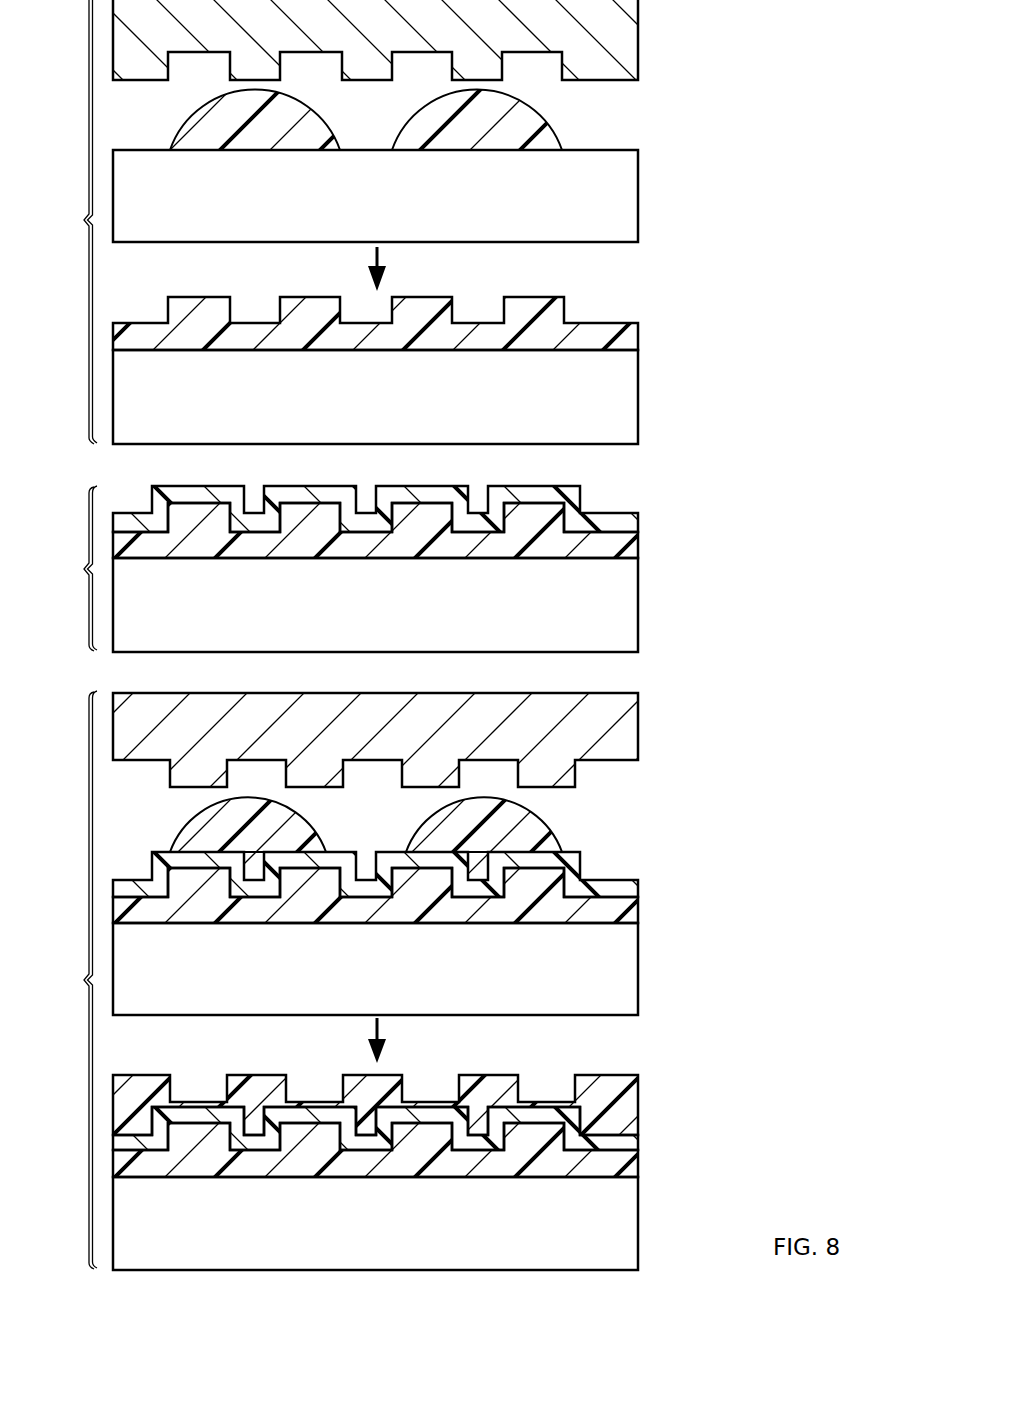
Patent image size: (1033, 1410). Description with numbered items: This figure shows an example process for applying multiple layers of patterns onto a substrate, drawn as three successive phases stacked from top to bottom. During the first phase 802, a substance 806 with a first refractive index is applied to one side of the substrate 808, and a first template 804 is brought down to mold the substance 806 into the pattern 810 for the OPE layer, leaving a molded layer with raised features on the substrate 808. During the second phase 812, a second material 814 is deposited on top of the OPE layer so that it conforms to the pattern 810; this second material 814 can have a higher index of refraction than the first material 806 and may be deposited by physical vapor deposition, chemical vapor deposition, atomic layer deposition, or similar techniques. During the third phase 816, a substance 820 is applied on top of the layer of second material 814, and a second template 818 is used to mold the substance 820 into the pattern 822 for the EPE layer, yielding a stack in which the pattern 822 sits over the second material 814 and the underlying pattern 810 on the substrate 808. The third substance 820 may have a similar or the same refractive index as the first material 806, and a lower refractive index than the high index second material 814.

The first phase 802 is at (65, 222).
The first template 804 is at (630, 42).
The substance 806 is at (528, 118).
The substrate 808 is at (630, 195).
The pattern 810 is at (630, 338).
The second phase 812 is at (65, 568).
The second material 814 is at (630, 523).
The third phase 816 is at (65, 980).
The second template 818 is at (630, 740).
The substance 820 is at (537, 825).
The pattern 822 is at (630, 1100).